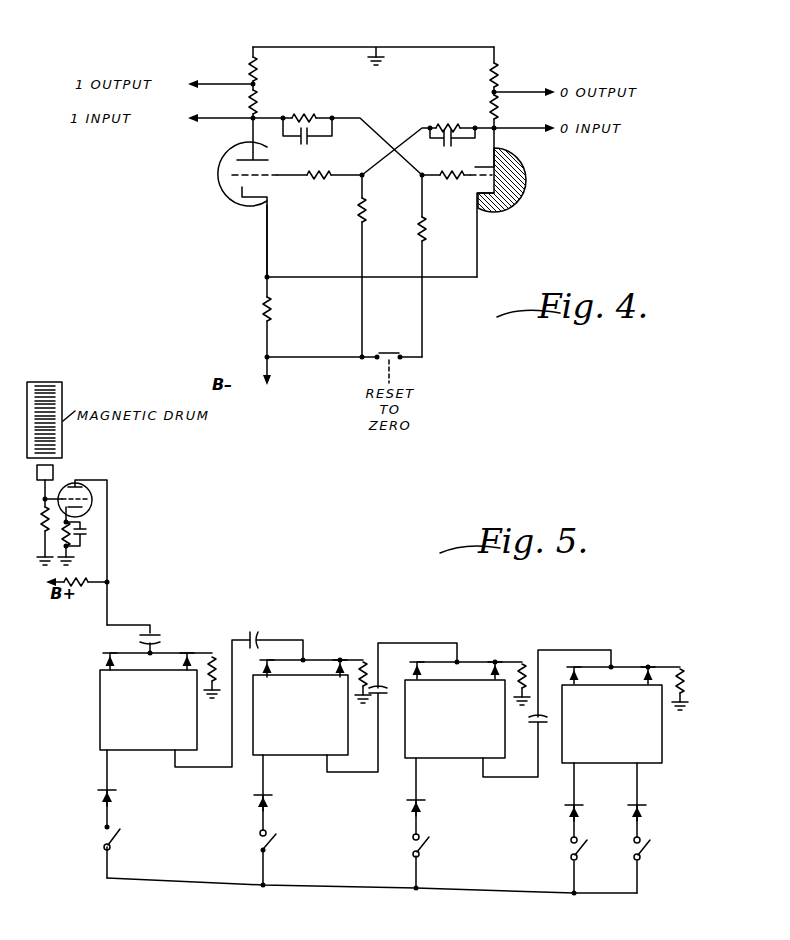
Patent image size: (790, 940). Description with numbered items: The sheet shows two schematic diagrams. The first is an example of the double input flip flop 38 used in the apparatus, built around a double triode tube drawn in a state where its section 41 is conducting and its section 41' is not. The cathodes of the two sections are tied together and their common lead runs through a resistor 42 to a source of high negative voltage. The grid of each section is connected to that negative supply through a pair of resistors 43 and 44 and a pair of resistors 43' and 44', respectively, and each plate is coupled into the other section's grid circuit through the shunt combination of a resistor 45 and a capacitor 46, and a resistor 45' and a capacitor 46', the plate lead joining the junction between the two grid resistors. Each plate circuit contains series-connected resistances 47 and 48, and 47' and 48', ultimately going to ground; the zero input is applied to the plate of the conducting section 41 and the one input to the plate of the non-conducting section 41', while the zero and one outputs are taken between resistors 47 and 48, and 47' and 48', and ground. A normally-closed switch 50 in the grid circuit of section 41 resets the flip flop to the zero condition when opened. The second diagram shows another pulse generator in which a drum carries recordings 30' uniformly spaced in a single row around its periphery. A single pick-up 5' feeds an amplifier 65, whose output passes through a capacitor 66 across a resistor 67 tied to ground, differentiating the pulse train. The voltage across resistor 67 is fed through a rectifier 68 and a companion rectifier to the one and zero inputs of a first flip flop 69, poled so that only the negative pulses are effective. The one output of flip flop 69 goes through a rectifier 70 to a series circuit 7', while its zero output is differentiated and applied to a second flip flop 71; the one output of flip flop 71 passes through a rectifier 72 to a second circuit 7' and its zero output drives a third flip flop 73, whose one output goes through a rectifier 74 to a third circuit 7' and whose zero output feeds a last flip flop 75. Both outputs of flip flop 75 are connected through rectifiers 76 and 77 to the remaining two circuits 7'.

In FIG. 5, the recordings 30' is at (67, 414).
In FIG. 5, the pick-up 5' is at (62, 463).
In FIG. 5, the amplifier 65 is at (98, 488).
In FIG. 5, the capacitor 66 is at (161, 646).
In FIG. 5, the resistor 67 is at (213, 655).
In FIG. 5, the rectifier 68 is at (101, 660).
In FIG. 5, the flip flop 69 is at (100, 711).
In FIG. 5, the rectifier 70 is at (100, 792).
In FIG. 5, the second flip flop 71 is at (300, 756).
In FIG. 5, the rectifier 72 is at (258, 798).
In FIG. 5, the third flip flop 73 is at (453, 759).
In FIG. 5, the rectifier 74 is at (421, 803).
In FIG. 5, the last flip flop 75 is at (652, 744).
In FIG. 5, the rectifier 76 is at (578, 807).
In FIG. 5, the rectifier 77 is at (641, 806).
In FIG. 5, the series circuit 7' is at (182, 826).
In FIG. 4, the double input flip flop 38 is at (250, 238).
In FIG. 4, the triode section 41 is at (523, 212).
In FIG. 4, the triode section 41' is at (217, 209).
In FIG. 4, the resistor 42 is at (262, 309).
In FIG. 4, the resistor 43 is at (452, 189).
In FIG. 4, the resistor 43' is at (314, 191).
In FIG. 4, the resistor 44 is at (403, 266).
In FIG. 4, the resistor 44' is at (340, 266).
In FIG. 4, the resistor 45 is at (453, 106).
In FIG. 4, the resistor 45' is at (329, 107).
In FIG. 4, the capacitor 46 is at (452, 149).
In FIG. 4, the capacitor 46' is at (310, 143).
In FIG. 4, the resistance 47 is at (517, 107).
In FIG. 4, the resistance 47' is at (278, 100).
In FIG. 4, the resistance 48 is at (521, 69).
In FIG. 4, the resistance 48' is at (278, 67).
In FIG. 4, the normally-closed switch 50 is at (386, 351).